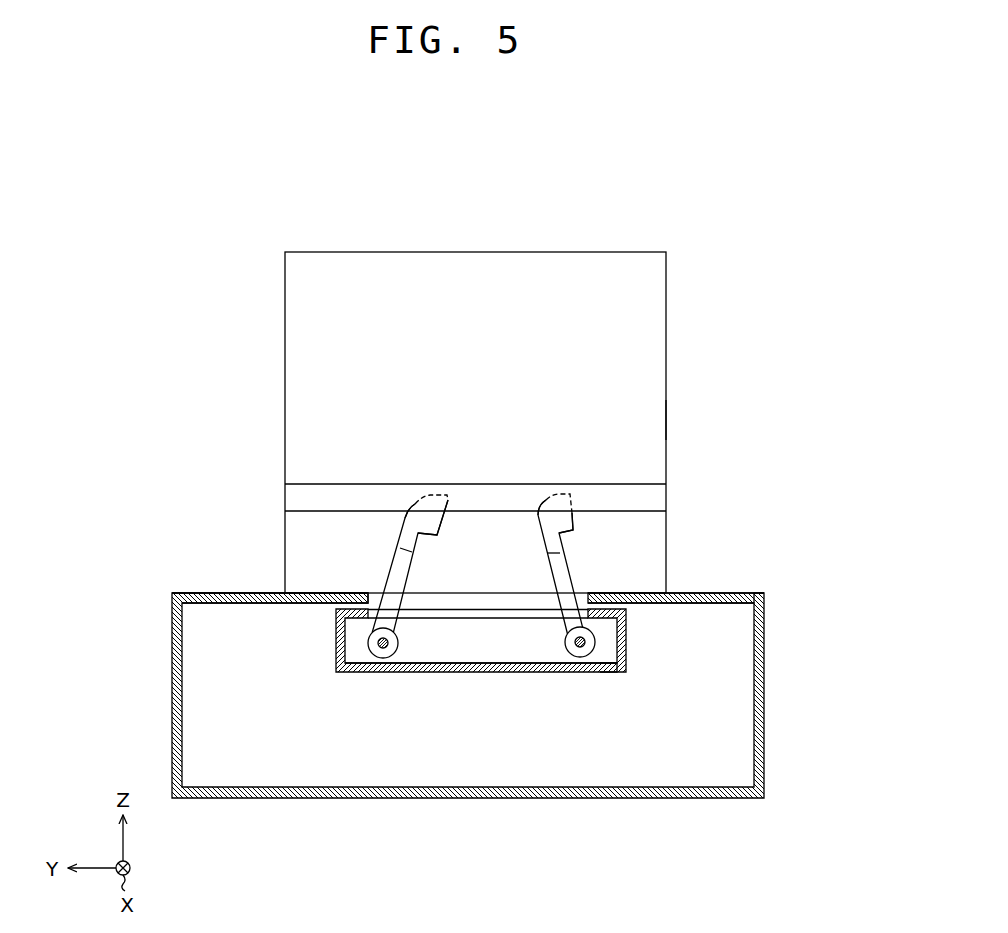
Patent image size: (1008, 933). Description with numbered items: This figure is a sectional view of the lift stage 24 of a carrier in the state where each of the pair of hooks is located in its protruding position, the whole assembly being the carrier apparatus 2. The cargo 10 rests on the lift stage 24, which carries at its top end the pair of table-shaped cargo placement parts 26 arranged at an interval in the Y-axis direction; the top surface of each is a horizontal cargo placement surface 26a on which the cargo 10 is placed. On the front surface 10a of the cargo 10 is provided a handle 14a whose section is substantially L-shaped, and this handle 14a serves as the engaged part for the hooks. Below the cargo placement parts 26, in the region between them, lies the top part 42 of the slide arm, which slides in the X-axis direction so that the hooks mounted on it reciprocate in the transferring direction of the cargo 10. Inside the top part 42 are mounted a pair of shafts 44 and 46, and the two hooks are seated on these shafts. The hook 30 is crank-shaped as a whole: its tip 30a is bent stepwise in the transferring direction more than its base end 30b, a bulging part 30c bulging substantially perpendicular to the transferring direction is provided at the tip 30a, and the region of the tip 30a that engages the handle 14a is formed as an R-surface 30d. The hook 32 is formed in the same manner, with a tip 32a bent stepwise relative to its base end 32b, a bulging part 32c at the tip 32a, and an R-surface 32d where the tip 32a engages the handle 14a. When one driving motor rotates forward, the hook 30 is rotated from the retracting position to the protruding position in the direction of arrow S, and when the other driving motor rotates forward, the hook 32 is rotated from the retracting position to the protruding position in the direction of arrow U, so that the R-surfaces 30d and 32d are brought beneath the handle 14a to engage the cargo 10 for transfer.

The attachment device 2 is at (503, 686).
The cargo 10 is at (642, 365).
The front surface 10a is at (642, 418).
The handle 14a is at (642, 495).
The lift stage 24 is at (764, 700).
The cargo placement parts 26 is at (223, 605).
The cargo placement surface 26a is at (232, 593).
The hook 30 is at (365, 576).
The tip of the hook 30a is at (410, 518).
The base end of the hook 30b is at (373, 650).
The bulging part 30c is at (438, 527).
The R-surface 30d is at (423, 492).
The hook 32 is at (632, 575).
The tip of the hook 32a is at (547, 513).
The base end of the hook 32b is at (580, 650).
The bulging part 32c is at (573, 523).
The R-surface 32d is at (541, 496).
The top part 42 is at (336, 652).
The shaft 44 is at (383, 650).
The shaft 46 is at (615, 670).
The arrow S is at (418, 575).
The arrow U is at (538, 575).